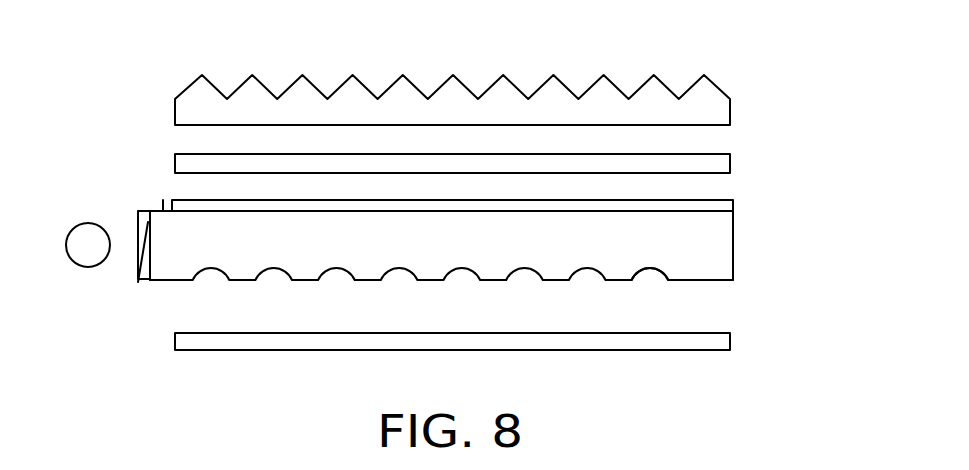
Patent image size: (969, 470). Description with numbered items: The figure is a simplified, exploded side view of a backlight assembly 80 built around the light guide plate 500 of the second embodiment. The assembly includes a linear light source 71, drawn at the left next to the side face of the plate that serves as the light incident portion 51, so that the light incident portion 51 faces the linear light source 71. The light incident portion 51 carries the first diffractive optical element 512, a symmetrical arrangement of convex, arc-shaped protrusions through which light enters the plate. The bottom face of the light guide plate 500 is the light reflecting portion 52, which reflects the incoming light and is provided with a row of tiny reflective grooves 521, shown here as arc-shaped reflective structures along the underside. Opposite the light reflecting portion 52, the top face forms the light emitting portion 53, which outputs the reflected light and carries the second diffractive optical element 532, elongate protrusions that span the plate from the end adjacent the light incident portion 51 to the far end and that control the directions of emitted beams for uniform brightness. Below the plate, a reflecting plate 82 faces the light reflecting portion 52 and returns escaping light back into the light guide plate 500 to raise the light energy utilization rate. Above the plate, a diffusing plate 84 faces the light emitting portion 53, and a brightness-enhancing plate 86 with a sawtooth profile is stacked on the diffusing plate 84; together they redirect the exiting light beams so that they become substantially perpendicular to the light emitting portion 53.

The backlight assembly 80 is at (372, 36).
The brightness-enhancing plate 86 is at (724, 111).
The diffusing plate 84 is at (720, 166).
The second diffractive optical element 532 is at (710, 204).
The light guide plate 500 is at (485, 267).
The reflective grooves 521 is at (655, 272).
The light reflecting portion 52 is at (240, 280).
The first diffractive optical element 512 is at (143, 222).
The light incident portion 51 is at (138, 282).
The light emitting portion 53 is at (163, 210).
The linear light source 71 is at (75, 243).
The reflecting plate 82 is at (713, 340).